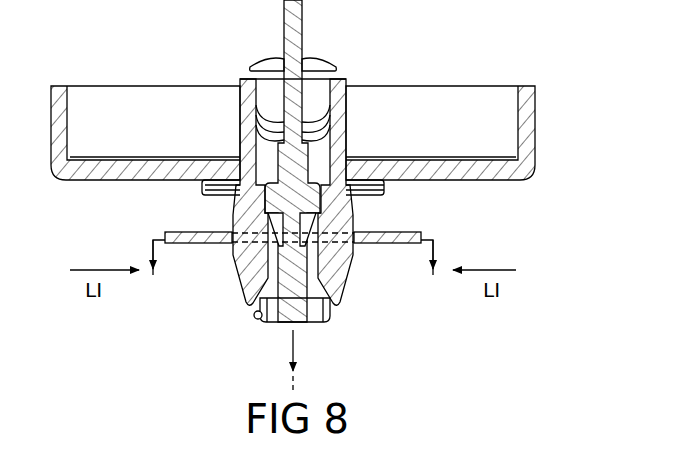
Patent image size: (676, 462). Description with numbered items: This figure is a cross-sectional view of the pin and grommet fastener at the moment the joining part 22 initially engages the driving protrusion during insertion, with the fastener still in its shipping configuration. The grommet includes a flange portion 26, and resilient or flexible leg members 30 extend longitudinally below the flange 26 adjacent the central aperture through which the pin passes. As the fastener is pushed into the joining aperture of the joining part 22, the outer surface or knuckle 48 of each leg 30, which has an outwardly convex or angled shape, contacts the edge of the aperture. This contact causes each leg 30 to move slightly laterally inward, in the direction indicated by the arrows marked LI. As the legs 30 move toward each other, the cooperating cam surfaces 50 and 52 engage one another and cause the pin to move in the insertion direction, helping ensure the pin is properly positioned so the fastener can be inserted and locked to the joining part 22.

The joining part 22 is at (178, 232).
The flange portion 26 is at (487, 170).
The leg members 30 is at (231, 281).
The knuckle 48 is at (237, 243).
The cam surface 50 is at (255, 318).
The cam surface 52 is at (330, 302).